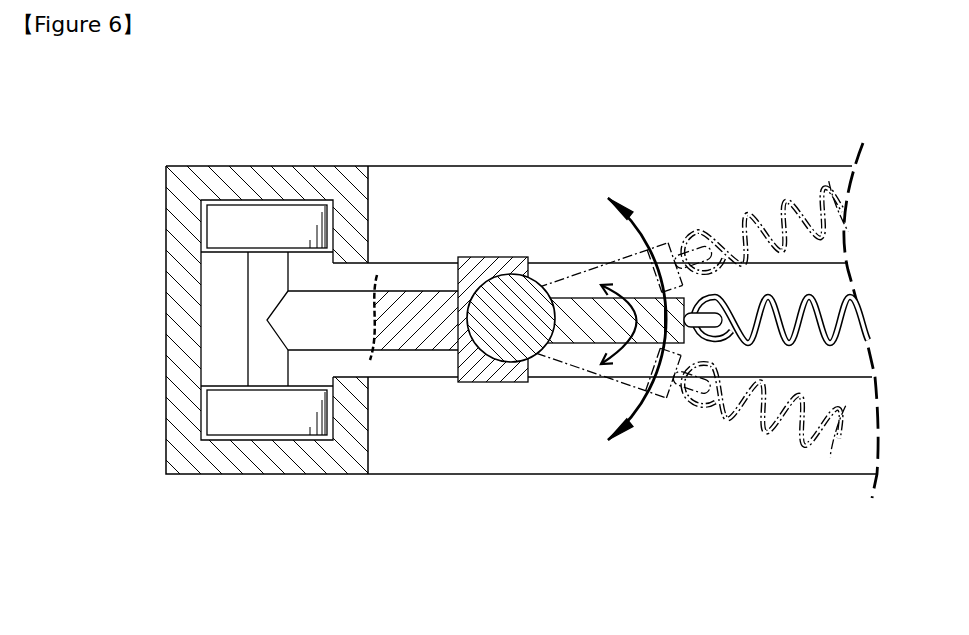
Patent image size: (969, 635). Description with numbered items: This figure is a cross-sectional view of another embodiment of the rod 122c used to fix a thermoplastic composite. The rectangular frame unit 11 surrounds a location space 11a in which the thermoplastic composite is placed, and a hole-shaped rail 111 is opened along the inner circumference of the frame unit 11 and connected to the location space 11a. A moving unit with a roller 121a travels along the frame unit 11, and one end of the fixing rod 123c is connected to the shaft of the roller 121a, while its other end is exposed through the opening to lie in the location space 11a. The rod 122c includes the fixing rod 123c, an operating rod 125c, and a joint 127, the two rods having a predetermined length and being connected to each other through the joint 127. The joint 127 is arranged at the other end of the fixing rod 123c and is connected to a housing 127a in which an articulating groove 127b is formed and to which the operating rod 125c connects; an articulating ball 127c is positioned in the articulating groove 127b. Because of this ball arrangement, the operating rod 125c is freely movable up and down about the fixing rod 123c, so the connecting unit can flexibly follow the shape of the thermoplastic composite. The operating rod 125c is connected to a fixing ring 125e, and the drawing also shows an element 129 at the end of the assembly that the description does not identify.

The frame unit 11 is at (189, 168).
The location space 11a is at (709, 201).
The rail 111 is at (228, 320).
The roller 121a is at (297, 199).
The rod 122c is at (498, 364).
The fixing rod 123c is at (403, 330).
The operating rod 125c is at (588, 322).
The fixing ring 125e is at (724, 328).
The joint 127 is at (481, 342).
The housing 127a is at (488, 360).
The articulating groove 127b is at (464, 320).
The articulating ball 127c is at (526, 372).
The spring 129 is at (812, 298).